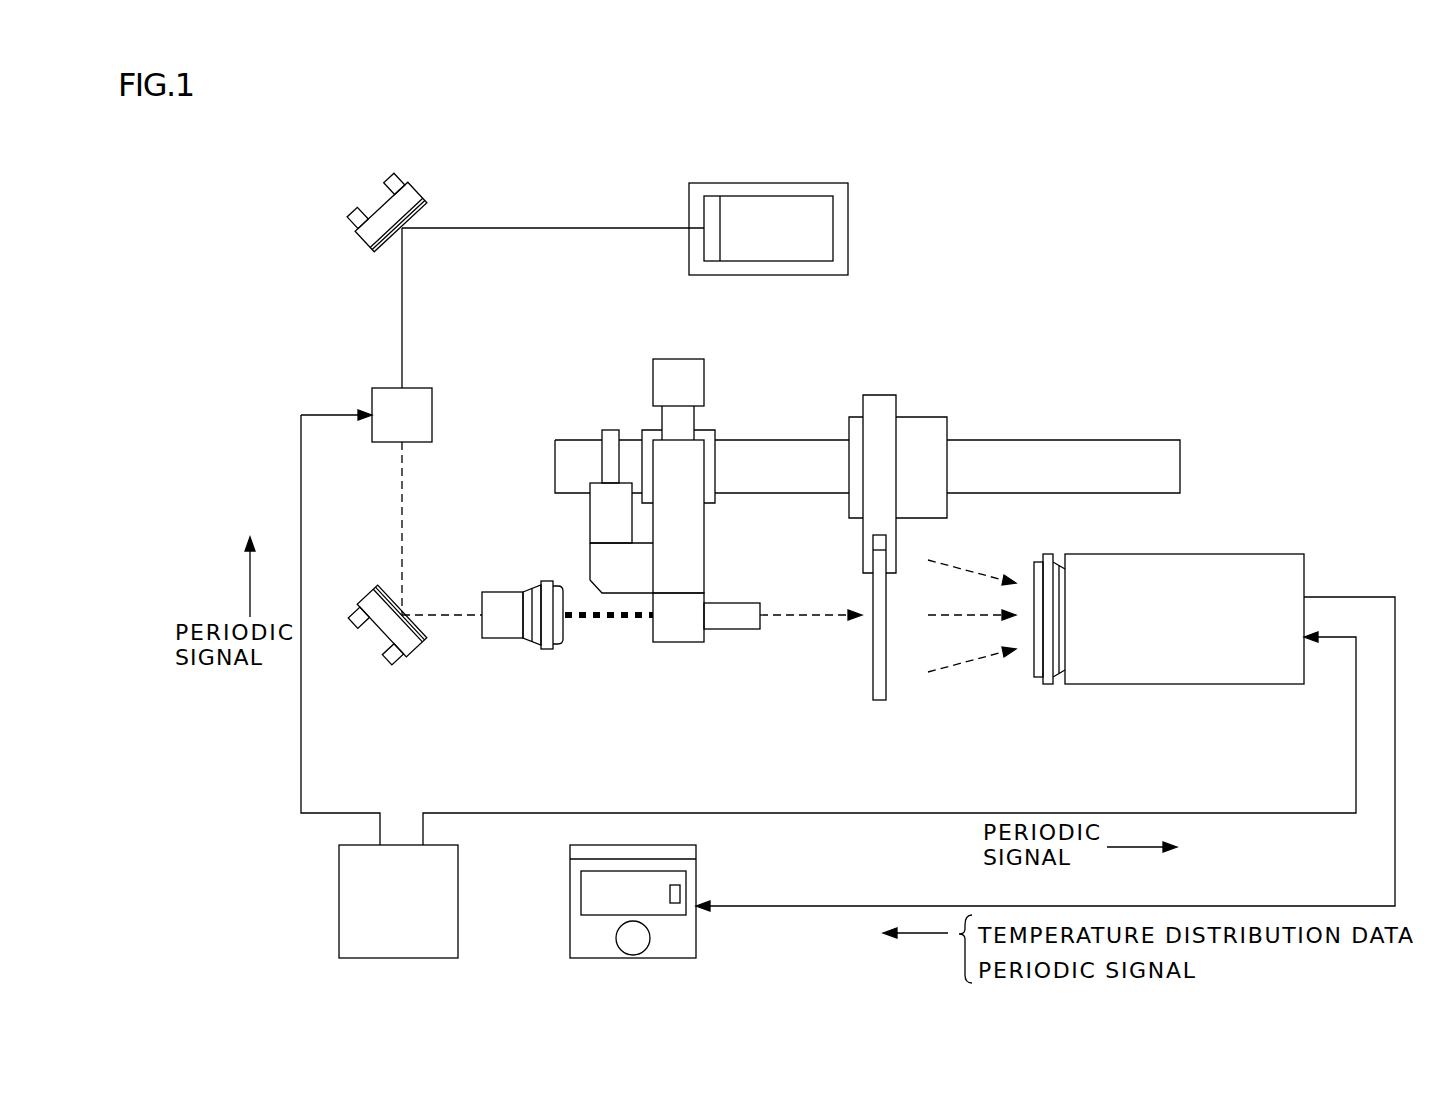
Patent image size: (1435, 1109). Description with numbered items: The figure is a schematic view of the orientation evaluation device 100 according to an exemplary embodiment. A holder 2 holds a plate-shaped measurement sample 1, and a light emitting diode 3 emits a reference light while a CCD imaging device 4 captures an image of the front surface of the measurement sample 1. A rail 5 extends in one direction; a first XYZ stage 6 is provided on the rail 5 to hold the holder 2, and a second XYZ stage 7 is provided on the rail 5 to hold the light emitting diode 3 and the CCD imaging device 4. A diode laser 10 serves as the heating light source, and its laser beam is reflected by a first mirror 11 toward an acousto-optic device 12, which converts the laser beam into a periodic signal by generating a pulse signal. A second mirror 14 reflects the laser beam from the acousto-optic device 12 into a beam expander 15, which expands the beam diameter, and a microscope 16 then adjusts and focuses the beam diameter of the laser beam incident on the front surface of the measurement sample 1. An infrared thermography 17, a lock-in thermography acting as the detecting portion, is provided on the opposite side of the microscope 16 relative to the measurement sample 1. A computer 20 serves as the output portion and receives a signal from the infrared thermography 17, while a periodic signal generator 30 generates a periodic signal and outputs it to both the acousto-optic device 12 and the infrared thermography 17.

The orientation evaluation device 100 is at (1255, 256).
The measurement sample 1 is at (878, 700).
The holder 2 is at (877, 395).
The light emitting diode 3 is at (610, 430).
The CCD imaging device 4 is at (680, 359).
The rail 5 is at (1080, 440).
The first XYZ stage 6 is at (928, 417).
The second XYZ stage 7 is at (714, 430).
The diode laser 10 is at (848, 216).
The first mirror 11 is at (380, 203).
The acousto-optic device 12 is at (385, 388).
The second mirror 14 is at (378, 636).
The beam expander 15 is at (508, 640).
The microscope 16 is at (730, 629).
The infrared thermography 17 is at (1245, 554).
The computer 20 is at (696, 942).
The periodic signal generator 30 is at (339, 898).